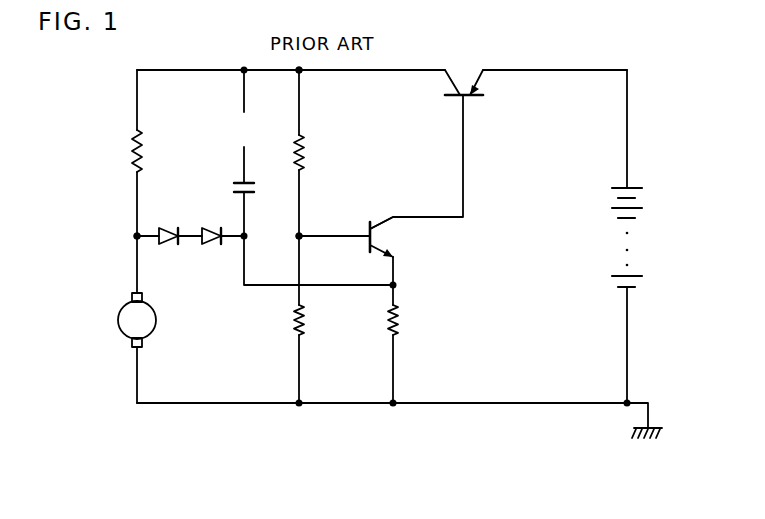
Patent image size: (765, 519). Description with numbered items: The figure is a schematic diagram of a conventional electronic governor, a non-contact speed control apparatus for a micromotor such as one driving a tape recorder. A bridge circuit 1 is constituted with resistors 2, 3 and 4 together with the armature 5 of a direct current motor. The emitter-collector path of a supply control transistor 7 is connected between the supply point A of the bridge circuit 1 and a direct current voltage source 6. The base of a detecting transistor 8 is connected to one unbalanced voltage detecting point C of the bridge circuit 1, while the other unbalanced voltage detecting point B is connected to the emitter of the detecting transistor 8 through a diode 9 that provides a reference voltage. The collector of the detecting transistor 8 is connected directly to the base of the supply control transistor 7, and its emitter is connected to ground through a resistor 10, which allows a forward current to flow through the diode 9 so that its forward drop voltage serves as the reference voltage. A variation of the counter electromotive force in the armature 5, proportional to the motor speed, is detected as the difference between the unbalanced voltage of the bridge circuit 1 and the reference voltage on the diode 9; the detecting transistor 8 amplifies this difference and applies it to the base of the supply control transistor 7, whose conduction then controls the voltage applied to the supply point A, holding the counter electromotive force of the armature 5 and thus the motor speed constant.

The bridge circuit 1 is at (227, 360).
The resistor 2 is at (136, 168).
The resistor 3 is at (305, 155).
The resistor 4 is at (303, 329).
The armature 5 is at (118, 333).
The direct current voltage source 6 is at (608, 238).
The supply control transistor 7 is at (472, 97).
The detecting transistor 8 is at (368, 232).
The diode 9 is at (195, 246).
The resistor 10 is at (398, 327).
The supply point A is at (302, 73).
The unbalanced voltage detecting point B is at (134, 239).
The unbalanced voltage detecting point C is at (301, 233).